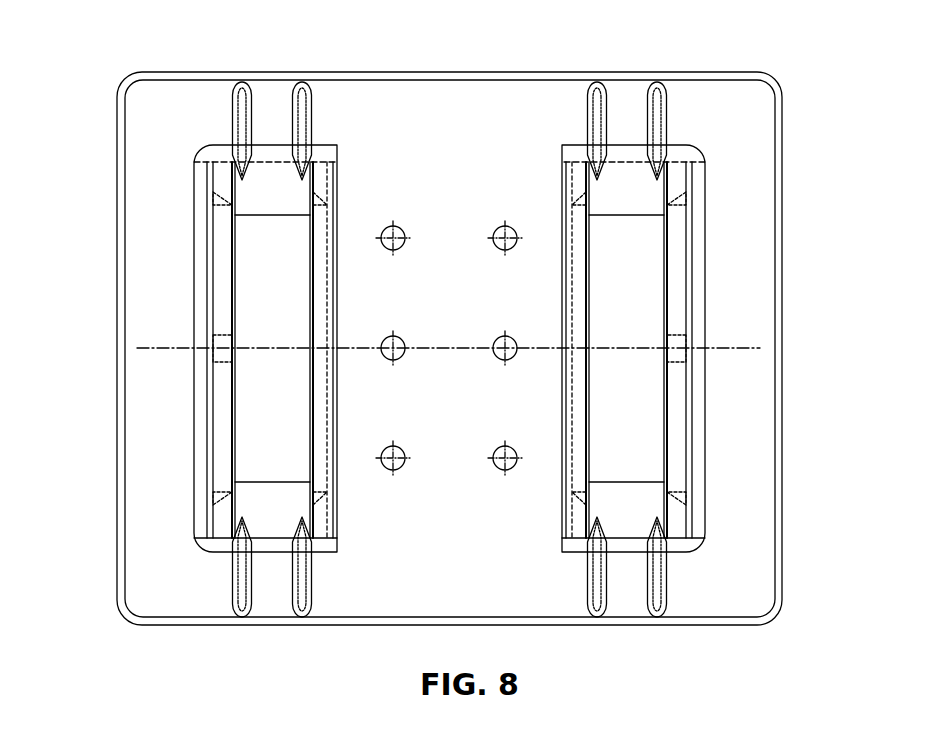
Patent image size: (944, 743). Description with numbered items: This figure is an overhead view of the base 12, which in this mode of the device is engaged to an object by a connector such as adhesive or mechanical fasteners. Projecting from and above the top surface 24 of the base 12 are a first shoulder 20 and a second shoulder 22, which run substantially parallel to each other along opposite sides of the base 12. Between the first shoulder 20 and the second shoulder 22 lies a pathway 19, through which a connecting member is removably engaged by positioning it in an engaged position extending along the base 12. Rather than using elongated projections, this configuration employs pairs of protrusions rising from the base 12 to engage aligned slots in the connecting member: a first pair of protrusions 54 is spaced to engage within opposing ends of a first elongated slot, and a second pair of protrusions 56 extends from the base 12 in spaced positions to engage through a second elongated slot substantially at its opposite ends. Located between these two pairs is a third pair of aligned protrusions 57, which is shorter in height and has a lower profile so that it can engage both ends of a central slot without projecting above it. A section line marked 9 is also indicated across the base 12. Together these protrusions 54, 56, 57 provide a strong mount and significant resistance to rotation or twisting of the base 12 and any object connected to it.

The section line 9- 9 is at (42, 348).
The base 12 is at (726, 115).
The pathway 19 is at (537, 405).
The first shoulder 20 is at (628, 191).
The second shoulder 22 is at (280, 208).
The top surface 24 is at (751, 588).
The first pair of protrusions 54 is at (400, 478).
The second pair of protrusions 56 is at (495, 228).
The third pair of protrusions 57 is at (400, 362).